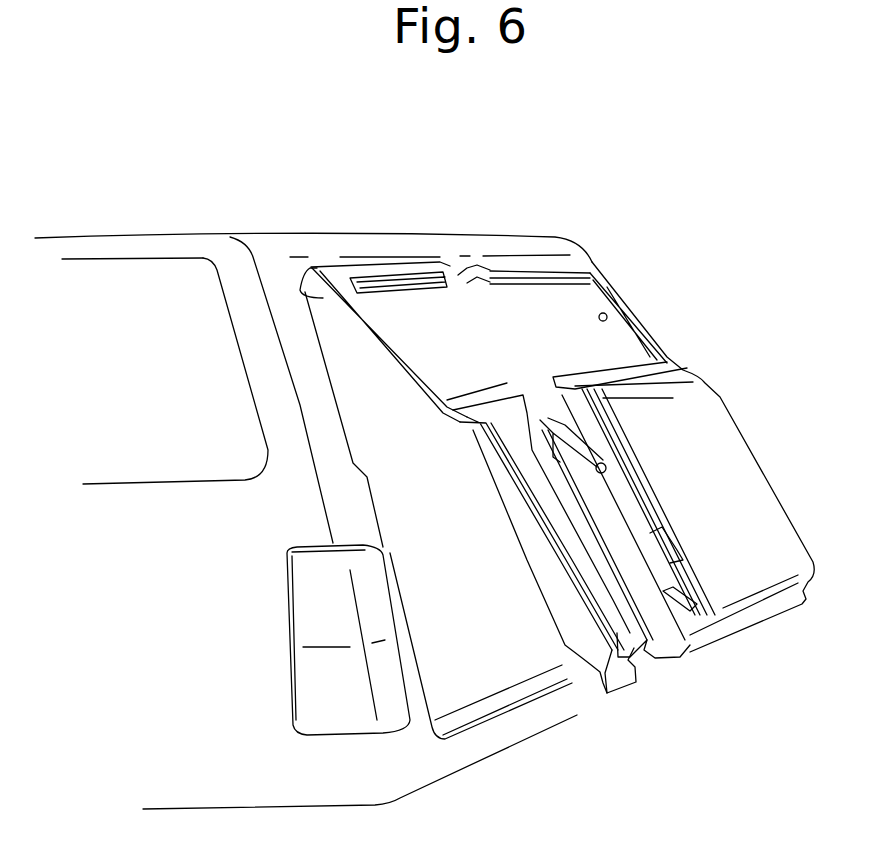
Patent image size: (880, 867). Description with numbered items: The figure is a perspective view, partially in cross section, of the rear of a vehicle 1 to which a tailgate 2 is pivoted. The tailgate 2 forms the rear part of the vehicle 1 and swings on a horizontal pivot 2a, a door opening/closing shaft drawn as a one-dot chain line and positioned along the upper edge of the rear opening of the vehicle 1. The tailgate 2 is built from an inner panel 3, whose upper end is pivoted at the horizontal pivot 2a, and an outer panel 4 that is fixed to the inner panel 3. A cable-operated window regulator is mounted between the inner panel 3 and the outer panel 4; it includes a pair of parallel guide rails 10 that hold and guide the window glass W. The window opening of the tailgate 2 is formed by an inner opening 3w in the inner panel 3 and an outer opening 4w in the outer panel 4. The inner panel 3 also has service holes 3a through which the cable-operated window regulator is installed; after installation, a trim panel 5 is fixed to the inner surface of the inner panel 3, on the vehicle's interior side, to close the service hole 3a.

The vehicle 1 is at (632, 225).
The tailgate 2 is at (745, 437).
The horizontal pivot 2a is at (327, 262).
The inner panel 3 is at (551, 413).
The service hole 3a is at (617, 463).
The inner opening 3w is at (597, 310).
The outer panel 4 is at (717, 400).
The outer opening 4w is at (593, 277).
The trim panel 5 is at (623, 497).
The guide rail 10 is at (670, 577).
The window glass W is at (585, 365).